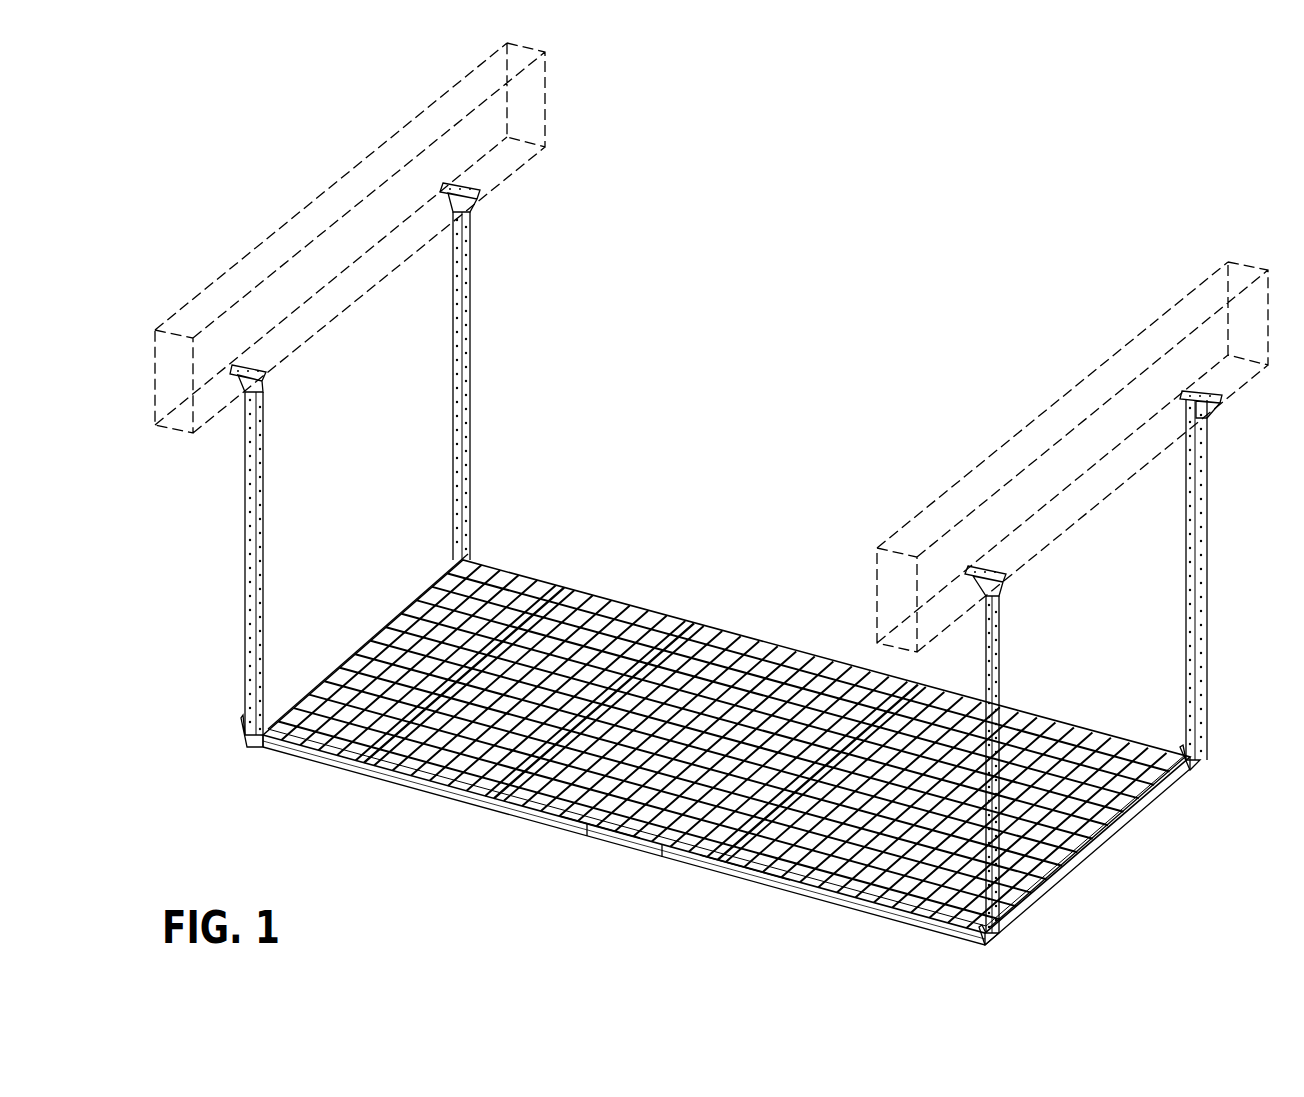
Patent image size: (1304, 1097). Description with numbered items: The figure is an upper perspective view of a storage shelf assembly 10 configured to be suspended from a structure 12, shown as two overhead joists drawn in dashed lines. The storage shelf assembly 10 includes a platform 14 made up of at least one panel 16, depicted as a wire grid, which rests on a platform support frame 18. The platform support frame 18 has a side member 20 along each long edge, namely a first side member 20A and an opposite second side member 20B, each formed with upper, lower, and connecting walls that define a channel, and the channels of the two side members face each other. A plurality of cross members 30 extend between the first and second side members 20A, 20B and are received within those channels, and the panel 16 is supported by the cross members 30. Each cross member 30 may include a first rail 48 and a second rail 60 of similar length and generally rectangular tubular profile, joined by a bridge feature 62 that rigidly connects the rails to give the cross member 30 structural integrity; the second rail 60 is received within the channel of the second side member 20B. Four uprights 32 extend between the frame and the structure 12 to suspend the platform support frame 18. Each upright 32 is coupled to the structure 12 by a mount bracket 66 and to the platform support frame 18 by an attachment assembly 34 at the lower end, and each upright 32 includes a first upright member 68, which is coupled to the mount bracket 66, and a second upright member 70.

The storage shelf assembly 10 is at (620, 570).
The structure 12 is at (350, 162).
The platform 14 is at (467, 800).
The panel 16 is at (610, 630).
The platform support frame 18 is at (820, 900).
The side member 20 is at (370, 638).
The first side member 20A is at (428, 598).
The second side member 20B is at (1140, 818).
The cross member 30 is at (566, 574).
The upright 32 is at (474, 304).
The attachment assembly 34 is at (253, 719).
The first rail 48 is at (385, 773).
The second rail 60 is at (743, 872).
The bridge feature 62 is at (613, 835).
The mount bracket 66 is at (478, 193).
The first upright member 68 is at (465, 247).
The second upright member 70 is at (470, 440).